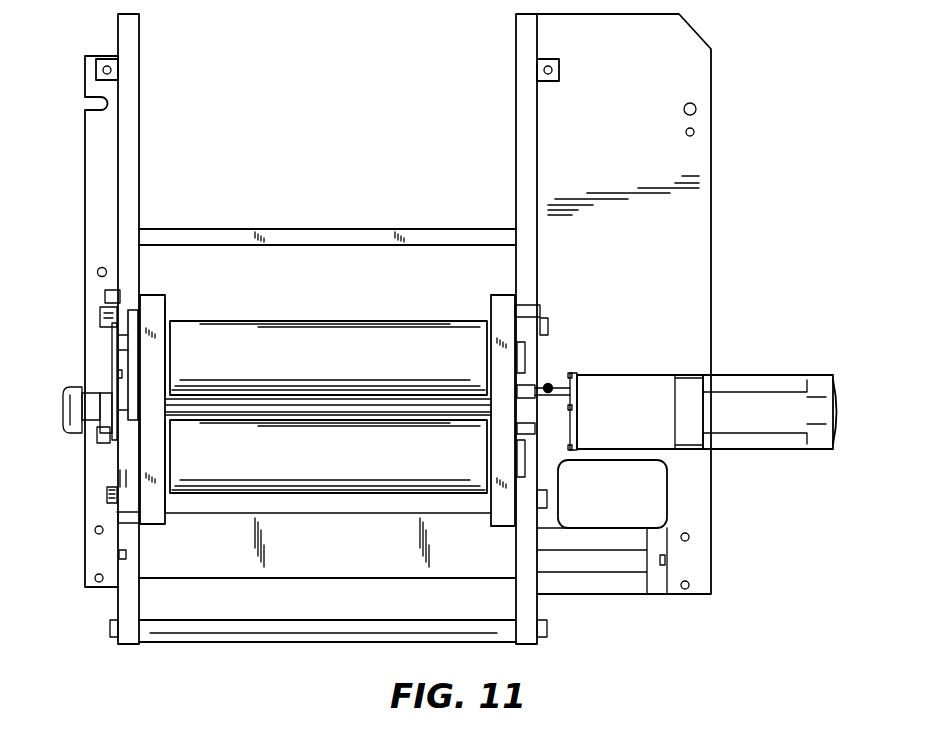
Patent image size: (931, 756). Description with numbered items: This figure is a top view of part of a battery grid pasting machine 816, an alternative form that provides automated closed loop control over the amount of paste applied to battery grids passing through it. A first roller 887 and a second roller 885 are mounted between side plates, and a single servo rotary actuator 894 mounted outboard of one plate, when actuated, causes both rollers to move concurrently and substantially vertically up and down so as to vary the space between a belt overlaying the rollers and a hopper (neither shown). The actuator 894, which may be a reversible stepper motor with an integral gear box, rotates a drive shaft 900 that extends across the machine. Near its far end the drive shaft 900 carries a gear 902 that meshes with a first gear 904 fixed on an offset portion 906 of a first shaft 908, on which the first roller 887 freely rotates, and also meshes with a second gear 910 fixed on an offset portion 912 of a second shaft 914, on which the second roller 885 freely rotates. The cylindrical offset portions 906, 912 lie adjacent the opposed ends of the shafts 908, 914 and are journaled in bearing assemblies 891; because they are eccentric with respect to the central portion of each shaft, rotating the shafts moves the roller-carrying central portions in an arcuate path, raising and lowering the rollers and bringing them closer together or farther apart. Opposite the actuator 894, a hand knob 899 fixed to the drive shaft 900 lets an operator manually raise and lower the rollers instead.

The battery grid pasting machine 816 is at (735, 303).
The second roller 885 is at (306, 498).
The first roller 887 is at (310, 320).
The bearing assemblies 891 is at (522, 356).
The servo rotary actuator 894 is at (756, 373).
The hand knob 899 is at (62, 430).
The drive shaft 900 is at (380, 400).
The gear 902 is at (122, 393).
The first gear 904 is at (122, 347).
The offset portion 906 is at (134, 340).
The first shaft 908 is at (167, 320).
The second gear 910 is at (120, 474).
The offset portion 912 is at (133, 470).
The second shaft 914 is at (167, 494).